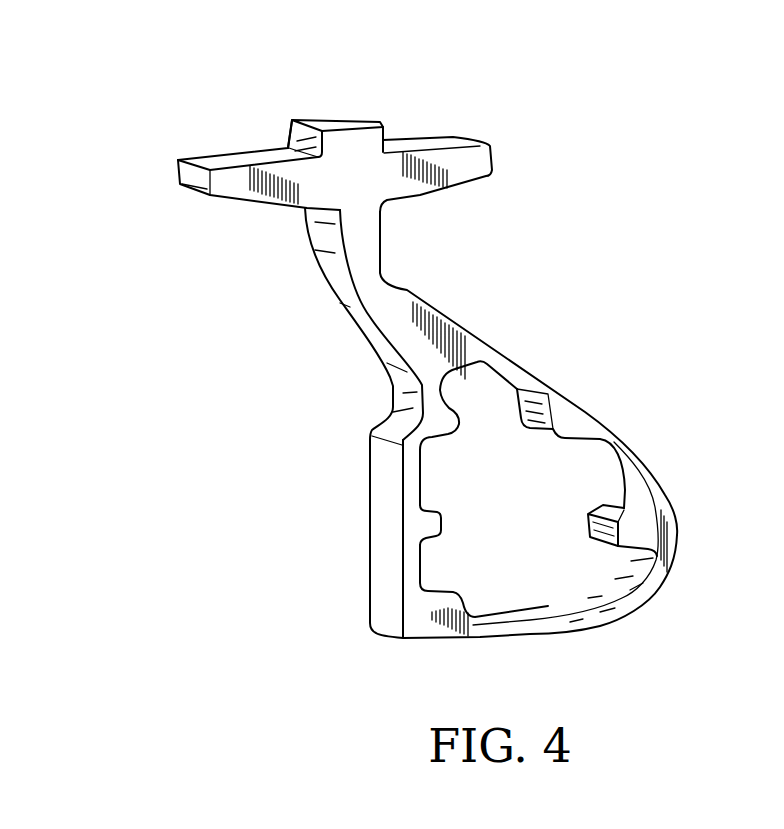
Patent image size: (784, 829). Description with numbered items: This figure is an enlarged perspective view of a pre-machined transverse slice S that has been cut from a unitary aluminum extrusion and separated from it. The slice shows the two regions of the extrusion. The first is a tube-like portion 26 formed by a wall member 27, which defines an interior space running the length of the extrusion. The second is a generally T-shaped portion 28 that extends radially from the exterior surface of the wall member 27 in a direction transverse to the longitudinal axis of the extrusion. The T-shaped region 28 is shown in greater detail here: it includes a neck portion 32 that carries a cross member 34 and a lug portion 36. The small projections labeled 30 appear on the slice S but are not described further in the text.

The tube-like portion 26 is at (148, 435).
The wall member 27 is at (637, 596).
The T-shaped portion 28 is at (148, 100).
The projections 30 is at (444, 428).
The neck portion 32 is at (405, 288).
The cross member 34 is at (477, 168).
The lug portion 36 is at (345, 122).
The pre-machined transverse slice S is at (518, 325).